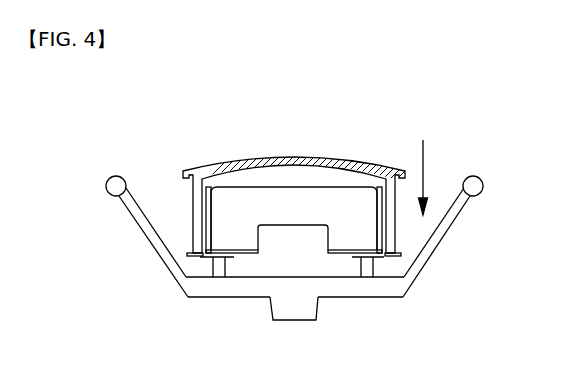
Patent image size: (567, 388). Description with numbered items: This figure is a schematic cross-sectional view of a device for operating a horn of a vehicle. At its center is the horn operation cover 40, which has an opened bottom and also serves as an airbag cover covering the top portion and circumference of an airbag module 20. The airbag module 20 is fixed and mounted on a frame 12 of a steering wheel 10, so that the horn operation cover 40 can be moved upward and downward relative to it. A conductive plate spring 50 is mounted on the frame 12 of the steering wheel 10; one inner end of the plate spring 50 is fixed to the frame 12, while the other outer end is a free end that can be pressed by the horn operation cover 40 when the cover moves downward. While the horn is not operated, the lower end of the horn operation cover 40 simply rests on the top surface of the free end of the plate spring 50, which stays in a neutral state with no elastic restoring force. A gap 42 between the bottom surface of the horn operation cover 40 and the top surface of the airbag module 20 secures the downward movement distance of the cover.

The steering wheel 10 is at (452, 252).
The frame 12 is at (347, 292).
The airbag module 20 is at (268, 193).
The horn operation cover 40 is at (225, 165).
The gap 42 is at (340, 178).
The plate spring 50 is at (183, 267).